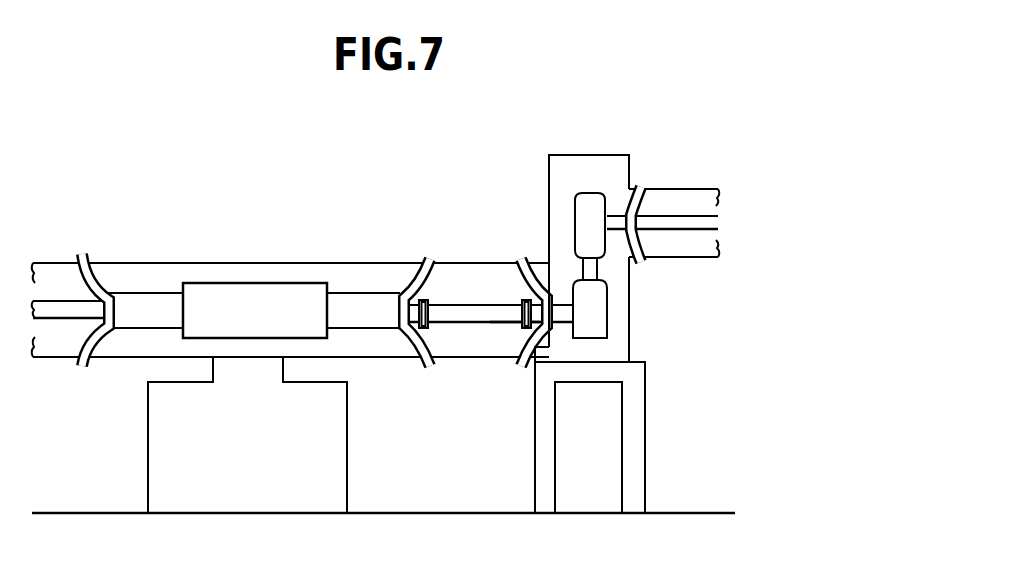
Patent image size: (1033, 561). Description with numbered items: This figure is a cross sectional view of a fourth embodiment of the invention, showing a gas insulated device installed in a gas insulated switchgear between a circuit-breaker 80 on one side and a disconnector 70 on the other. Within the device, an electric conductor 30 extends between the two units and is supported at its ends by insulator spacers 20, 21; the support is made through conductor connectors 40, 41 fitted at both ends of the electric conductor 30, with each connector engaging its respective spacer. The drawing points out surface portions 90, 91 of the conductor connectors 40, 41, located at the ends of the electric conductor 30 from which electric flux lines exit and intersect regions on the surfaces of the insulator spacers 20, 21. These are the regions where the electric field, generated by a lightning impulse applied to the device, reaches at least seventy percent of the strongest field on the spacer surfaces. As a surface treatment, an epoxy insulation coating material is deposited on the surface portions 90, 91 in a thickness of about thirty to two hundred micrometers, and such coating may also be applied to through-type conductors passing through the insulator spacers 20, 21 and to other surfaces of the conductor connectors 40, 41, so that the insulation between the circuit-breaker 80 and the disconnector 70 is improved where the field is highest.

The insulator spacer 20 is at (410, 282).
The insulator spacer 21 is at (522, 256).
The electric conductor 30 is at (463, 323).
The conductor connector 40 is at (430, 309).
The conductor connector 41 is at (510, 325).
The disconnector 70 is at (593, 154).
The circuit-breaker 80 is at (210, 283).
The surface portion of conductor connector 90 is at (428, 300).
The surface portion of conductor connector 91 is at (523, 300).